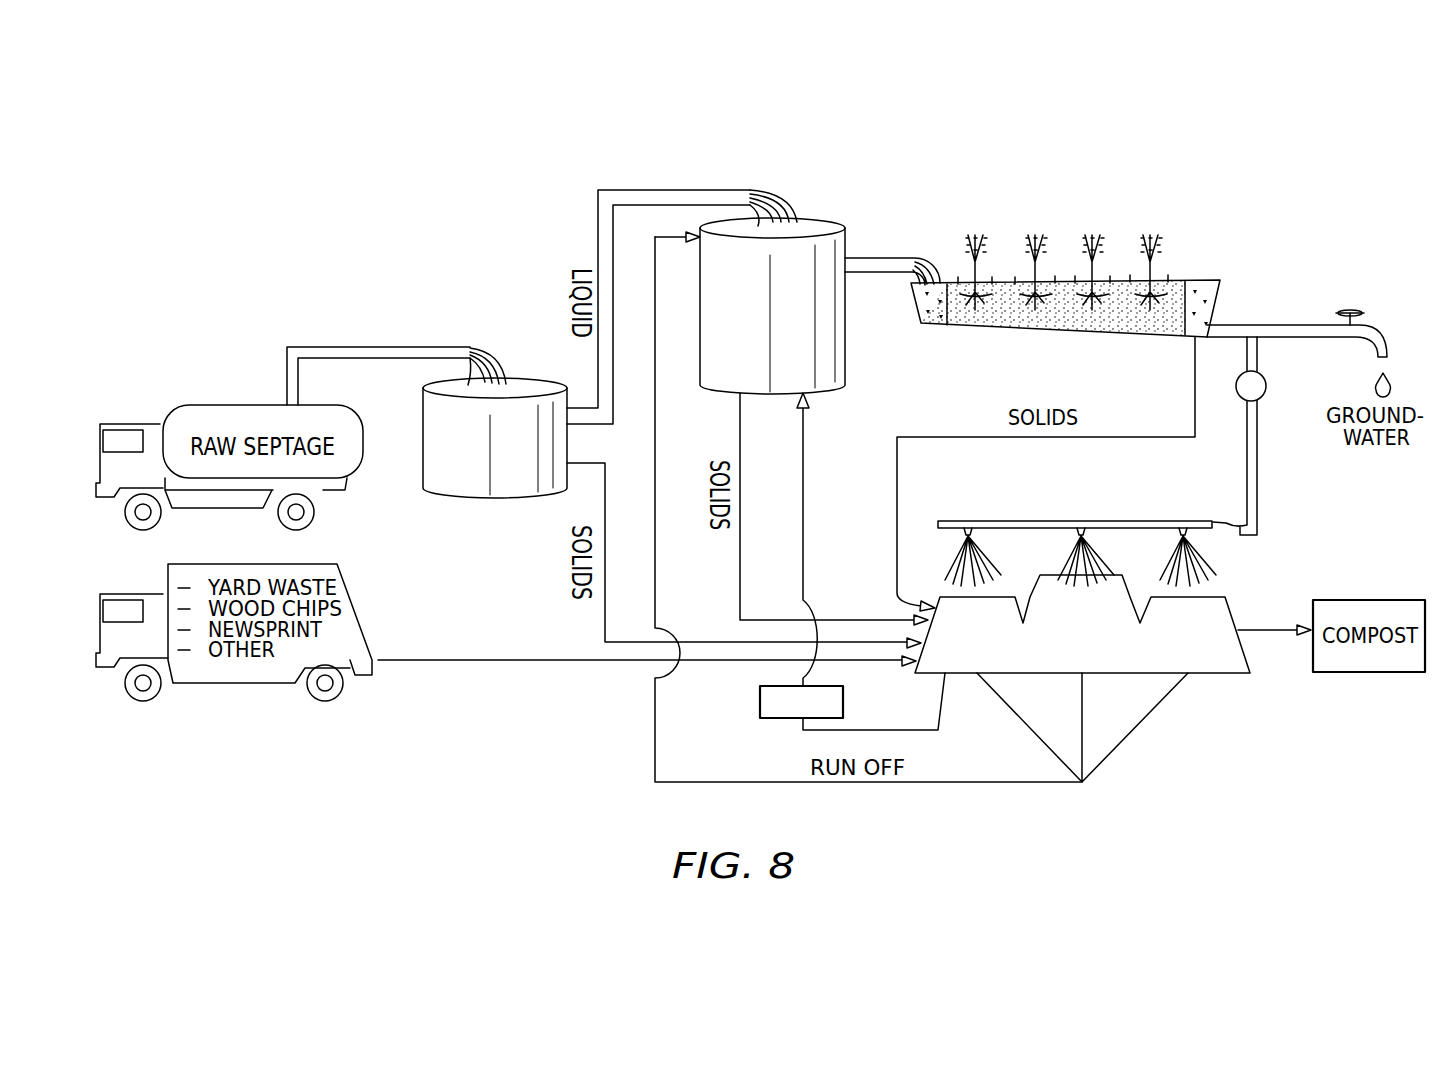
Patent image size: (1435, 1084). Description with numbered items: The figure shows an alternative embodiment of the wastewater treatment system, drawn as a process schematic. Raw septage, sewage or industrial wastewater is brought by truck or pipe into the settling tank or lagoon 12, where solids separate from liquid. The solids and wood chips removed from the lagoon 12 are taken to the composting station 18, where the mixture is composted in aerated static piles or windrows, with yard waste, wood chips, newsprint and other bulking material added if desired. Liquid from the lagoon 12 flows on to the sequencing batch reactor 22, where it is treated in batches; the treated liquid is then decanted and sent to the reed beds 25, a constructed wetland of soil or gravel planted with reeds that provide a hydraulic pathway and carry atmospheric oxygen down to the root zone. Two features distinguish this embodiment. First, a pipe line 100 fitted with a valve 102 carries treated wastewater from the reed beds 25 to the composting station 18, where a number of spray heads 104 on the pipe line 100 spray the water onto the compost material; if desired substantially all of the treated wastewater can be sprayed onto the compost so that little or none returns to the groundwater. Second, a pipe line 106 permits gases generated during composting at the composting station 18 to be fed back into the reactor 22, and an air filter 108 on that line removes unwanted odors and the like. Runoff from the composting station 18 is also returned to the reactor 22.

The settling tank or lagoon 12 is at (525, 387).
The sequencing batch reactor 22 is at (802, 228).
The reed beds 25 is at (1177, 282).
The valve 102 is at (1262, 378).
The pipe line 100 is at (1257, 488).
The spray heads 104 is at (1158, 487).
The pipe line 106 is at (803, 548).
The air filter 108 is at (760, 707).
The composting station 18 is at (1236, 670).